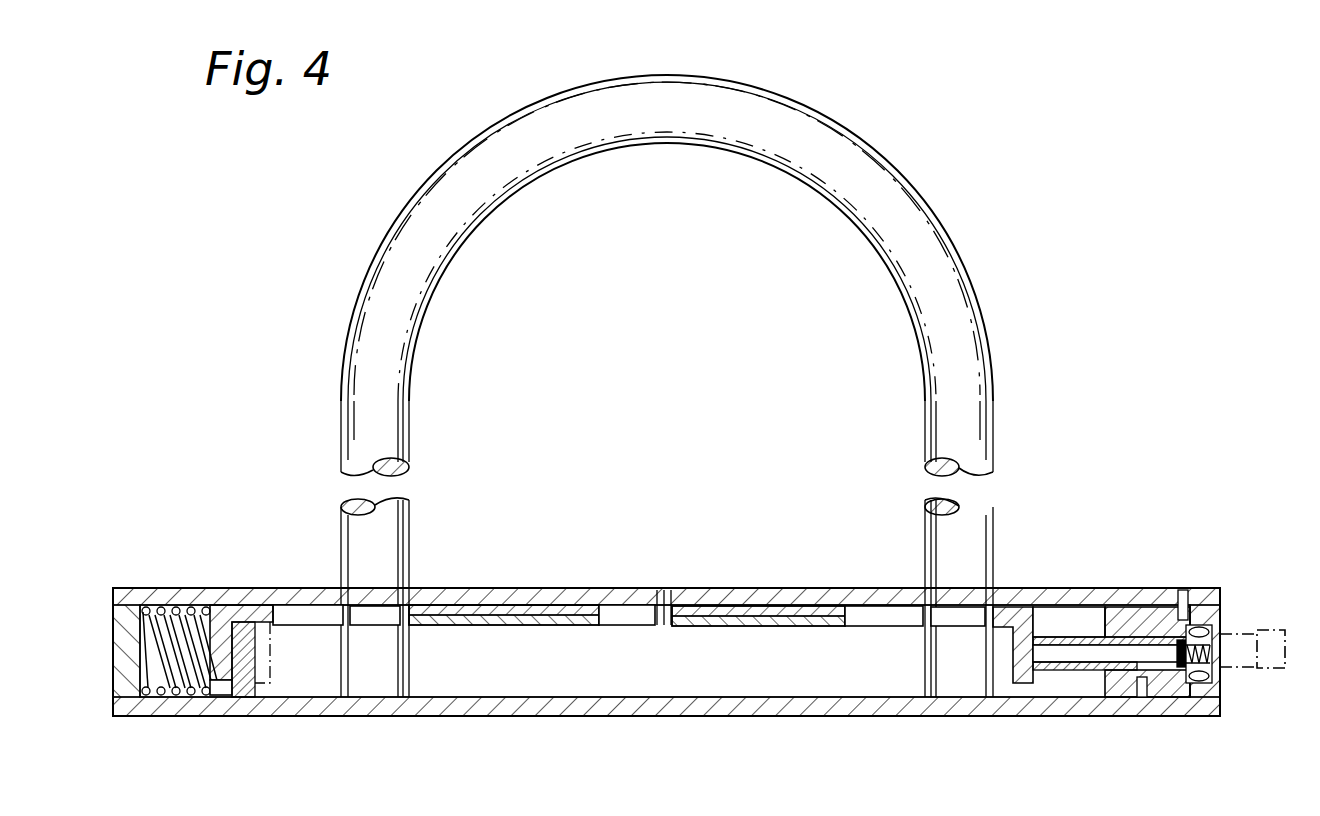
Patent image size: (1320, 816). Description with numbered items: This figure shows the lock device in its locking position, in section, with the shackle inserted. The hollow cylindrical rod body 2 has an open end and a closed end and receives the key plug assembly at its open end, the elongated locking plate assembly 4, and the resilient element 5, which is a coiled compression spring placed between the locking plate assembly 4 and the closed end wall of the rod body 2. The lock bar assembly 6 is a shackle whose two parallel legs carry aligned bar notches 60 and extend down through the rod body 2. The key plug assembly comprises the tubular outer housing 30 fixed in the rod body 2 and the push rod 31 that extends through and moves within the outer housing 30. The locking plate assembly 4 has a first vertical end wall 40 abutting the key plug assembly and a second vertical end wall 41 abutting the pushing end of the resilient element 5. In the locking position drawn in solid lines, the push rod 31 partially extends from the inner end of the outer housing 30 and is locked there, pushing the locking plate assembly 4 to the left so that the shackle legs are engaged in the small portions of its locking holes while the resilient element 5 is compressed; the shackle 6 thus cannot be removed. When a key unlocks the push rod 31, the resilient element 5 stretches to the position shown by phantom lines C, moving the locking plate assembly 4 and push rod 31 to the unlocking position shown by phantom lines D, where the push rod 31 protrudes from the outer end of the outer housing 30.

The rod body 2 is at (745, 607).
The locking plate assembly 4 is at (522, 606).
The resilient element 5 is at (170, 606).
The lock bar assembly 6 is at (922, 189).
The outer housing 30 is at (1148, 608).
The push rod 31 is at (1080, 632).
The first vertical end wall 40 is at (1042, 624).
The second vertical end wall 41 is at (203, 606).
The bar notches 60 is at (384, 612).
The phantom lines indicating stretched position of resilient element C is at (256, 684).
The phantom lines indicating unlocking position D is at (1252, 626).